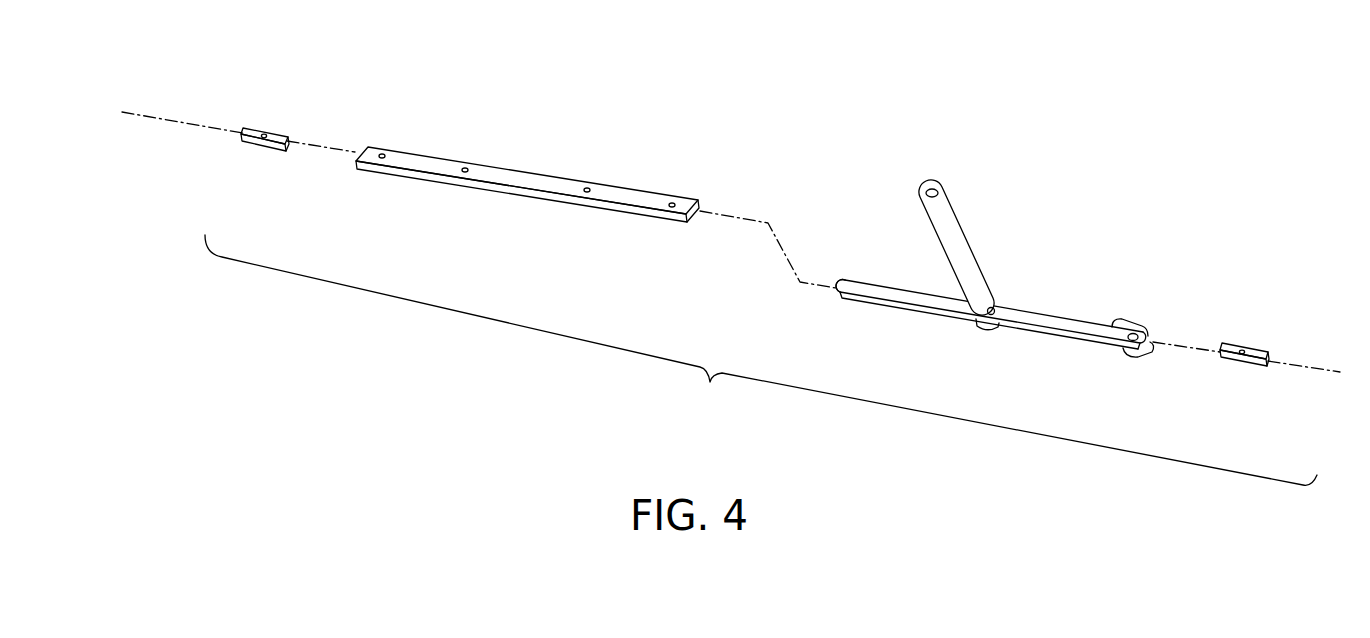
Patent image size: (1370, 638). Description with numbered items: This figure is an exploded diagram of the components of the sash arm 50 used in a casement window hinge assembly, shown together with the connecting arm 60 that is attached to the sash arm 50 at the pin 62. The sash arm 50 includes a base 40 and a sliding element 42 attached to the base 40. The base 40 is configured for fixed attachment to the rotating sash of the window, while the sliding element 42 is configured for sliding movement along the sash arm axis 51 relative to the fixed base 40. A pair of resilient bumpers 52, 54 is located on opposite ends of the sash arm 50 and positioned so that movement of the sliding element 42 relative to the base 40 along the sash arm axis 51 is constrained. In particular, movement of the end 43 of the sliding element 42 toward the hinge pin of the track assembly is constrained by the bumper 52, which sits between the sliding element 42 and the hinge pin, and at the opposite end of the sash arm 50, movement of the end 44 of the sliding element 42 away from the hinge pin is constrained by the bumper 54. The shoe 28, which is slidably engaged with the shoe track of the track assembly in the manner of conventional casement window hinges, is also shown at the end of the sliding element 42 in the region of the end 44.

The shoe 28 is at (1117, 318).
The base 40 is at (520, 198).
The sliding element 42 is at (920, 308).
The end of sliding element 43 is at (834, 289).
The end of sliding element 44 is at (1145, 354).
The sash arm 50 is at (710, 382).
The sash arm axis 51 is at (166, 118).
The resilient bumper 52 is at (265, 127).
The resilient bumper 54 is at (1240, 367).
The connecting arm 60 is at (962, 228).
The pin 62 is at (993, 306).